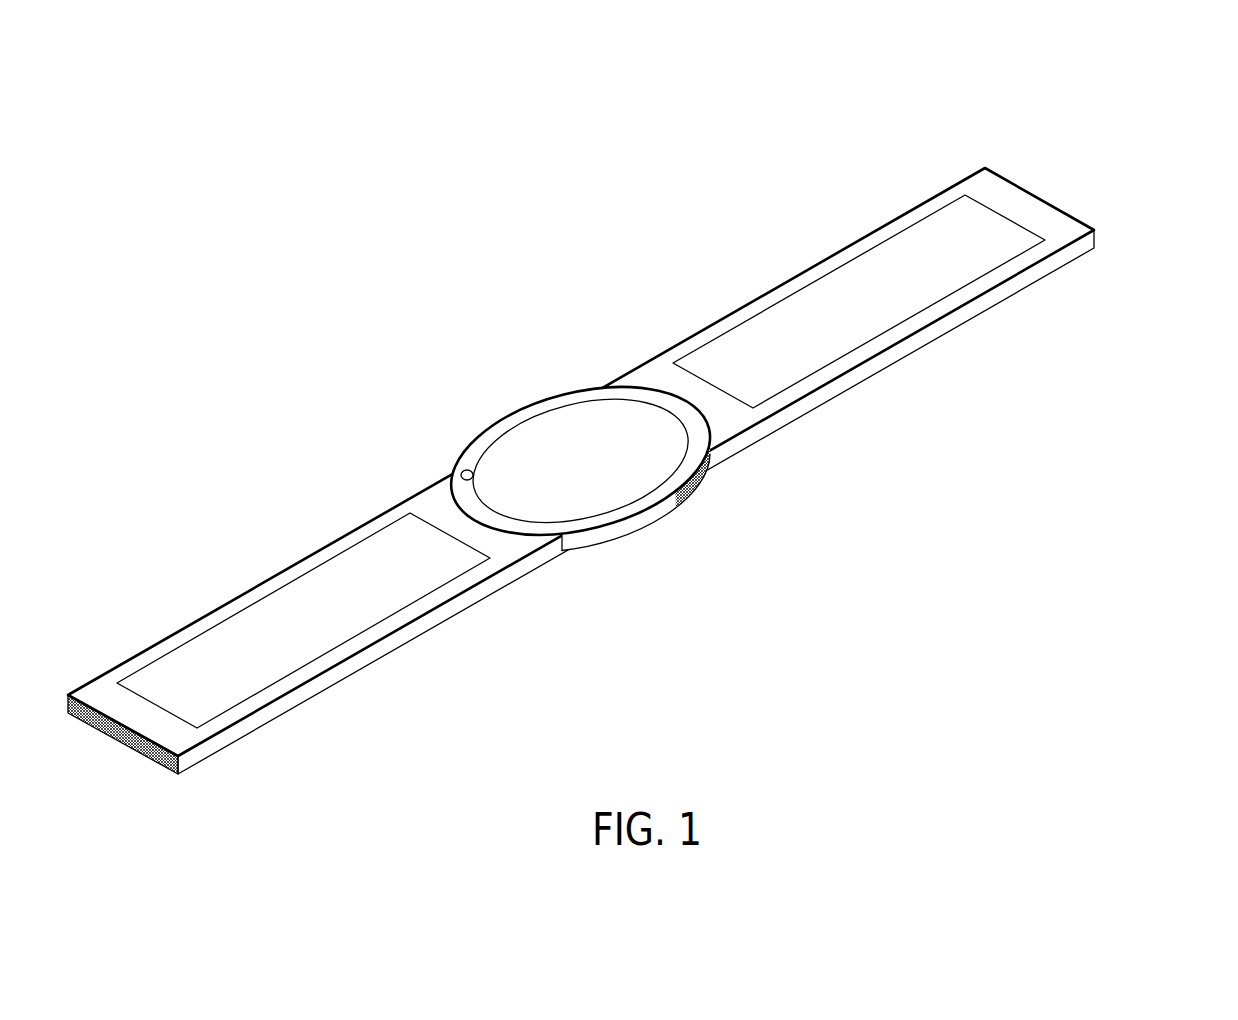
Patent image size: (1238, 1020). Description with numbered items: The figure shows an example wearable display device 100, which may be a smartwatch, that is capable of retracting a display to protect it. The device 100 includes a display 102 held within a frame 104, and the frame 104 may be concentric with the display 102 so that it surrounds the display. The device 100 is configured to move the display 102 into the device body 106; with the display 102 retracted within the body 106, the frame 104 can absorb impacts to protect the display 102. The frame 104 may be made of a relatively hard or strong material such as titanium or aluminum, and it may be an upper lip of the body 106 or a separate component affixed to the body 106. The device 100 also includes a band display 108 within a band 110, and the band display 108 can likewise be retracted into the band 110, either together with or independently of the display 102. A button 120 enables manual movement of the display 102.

The wearable display device 100 is at (652, 424).
The display 102 is at (513, 446).
The frame 104 is at (553, 400).
The device body 106 is at (678, 513).
The band display 108 is at (212, 652).
The band 110 is at (581, 471).
The button 120 is at (463, 473).